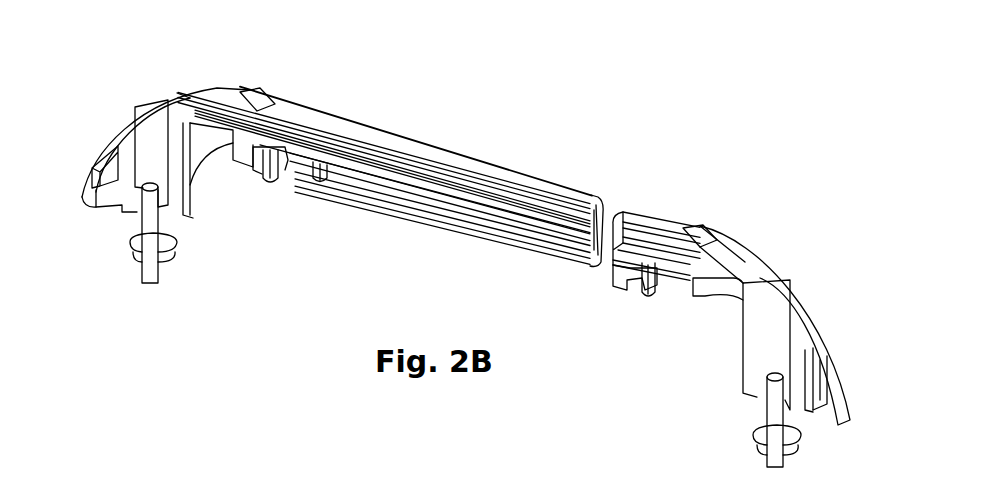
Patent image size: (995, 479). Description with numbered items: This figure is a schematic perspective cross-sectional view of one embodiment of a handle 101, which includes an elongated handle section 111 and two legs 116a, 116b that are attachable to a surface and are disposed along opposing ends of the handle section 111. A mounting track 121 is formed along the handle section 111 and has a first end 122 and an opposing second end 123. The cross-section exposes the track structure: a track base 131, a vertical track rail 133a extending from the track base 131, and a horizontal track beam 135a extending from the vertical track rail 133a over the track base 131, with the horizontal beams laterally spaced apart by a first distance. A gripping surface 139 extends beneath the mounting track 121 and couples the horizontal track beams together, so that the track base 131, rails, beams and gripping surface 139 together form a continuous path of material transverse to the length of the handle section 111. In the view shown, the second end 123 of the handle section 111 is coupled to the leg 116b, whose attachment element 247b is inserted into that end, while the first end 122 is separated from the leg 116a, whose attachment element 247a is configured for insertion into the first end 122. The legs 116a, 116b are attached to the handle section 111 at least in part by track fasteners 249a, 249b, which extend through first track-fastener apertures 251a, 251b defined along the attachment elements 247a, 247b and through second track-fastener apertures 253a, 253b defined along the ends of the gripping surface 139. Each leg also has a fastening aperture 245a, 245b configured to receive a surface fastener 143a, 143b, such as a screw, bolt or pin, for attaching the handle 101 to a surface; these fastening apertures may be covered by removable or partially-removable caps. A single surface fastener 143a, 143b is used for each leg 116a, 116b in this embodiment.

The handle 101 is at (480, 66).
The handle section 111 is at (392, 228).
The leg 116a is at (834, 294).
The leg 116b is at (112, 98).
The mounting track 121 is at (517, 116).
The first end 122 is at (575, 156).
The second end 123 is at (293, 82).
The track base 131 is at (535, 214).
The vertical track rail 133a is at (360, 150).
The horizontal track beam 135a is at (443, 158).
The gripping surface 139 is at (440, 220).
The surface fastener 143a is at (772, 417).
The surface fastener 143b is at (150, 232).
The fastening aperture 245a is at (770, 330).
The fastening aperture 245b is at (147, 134).
The attachment element 247a is at (636, 222).
The attachment element 247b is at (316, 180).
The track fastener 249a is at (648, 296).
The track fastener 249b is at (274, 184).
The first track-fastener aperture 251a is at (625, 284).
The first track-fastener aperture 251b is at (281, 178).
The second track-fastener aperture 253a is at (556, 262).
The second track-fastener aperture 253b is at (266, 176).